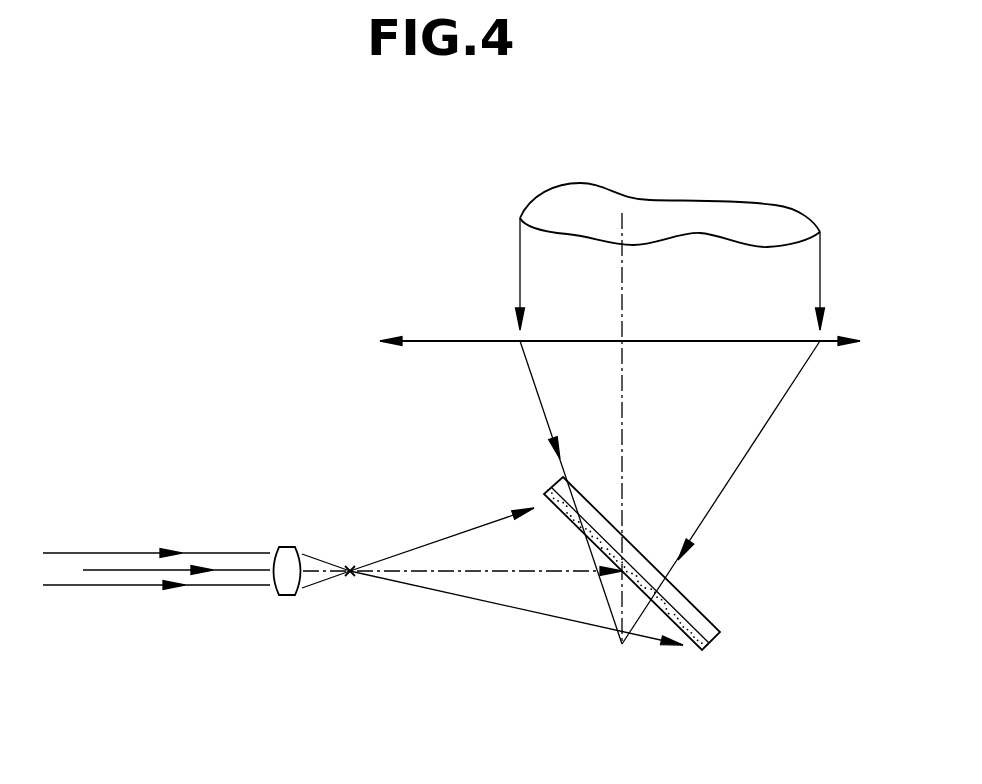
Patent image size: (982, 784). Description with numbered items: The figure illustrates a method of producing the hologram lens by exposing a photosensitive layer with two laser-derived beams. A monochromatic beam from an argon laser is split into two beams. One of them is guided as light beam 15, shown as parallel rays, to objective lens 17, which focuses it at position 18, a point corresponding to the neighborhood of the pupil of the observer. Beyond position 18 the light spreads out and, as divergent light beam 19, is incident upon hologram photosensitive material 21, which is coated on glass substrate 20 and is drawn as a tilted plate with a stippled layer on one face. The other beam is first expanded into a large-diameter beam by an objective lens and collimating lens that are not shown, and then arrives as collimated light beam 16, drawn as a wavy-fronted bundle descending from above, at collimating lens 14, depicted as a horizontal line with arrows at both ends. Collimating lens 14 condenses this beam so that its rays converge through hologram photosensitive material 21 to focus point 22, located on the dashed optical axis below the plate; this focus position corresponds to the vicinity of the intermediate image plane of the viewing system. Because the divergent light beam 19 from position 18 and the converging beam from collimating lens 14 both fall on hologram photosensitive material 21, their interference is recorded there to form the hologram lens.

The collimating lens 14 is at (447, 340).
The light beam 15 is at (138, 553).
The collimated light beam 16 is at (752, 215).
The objective lens 17 is at (286, 547).
The focus position 18 is at (350, 564).
The divergent light beam 19 is at (470, 500).
The glass substrate 20 is at (716, 633).
The hologram photosensitive material 21 is at (701, 651).
The focus point 22 is at (621, 645).